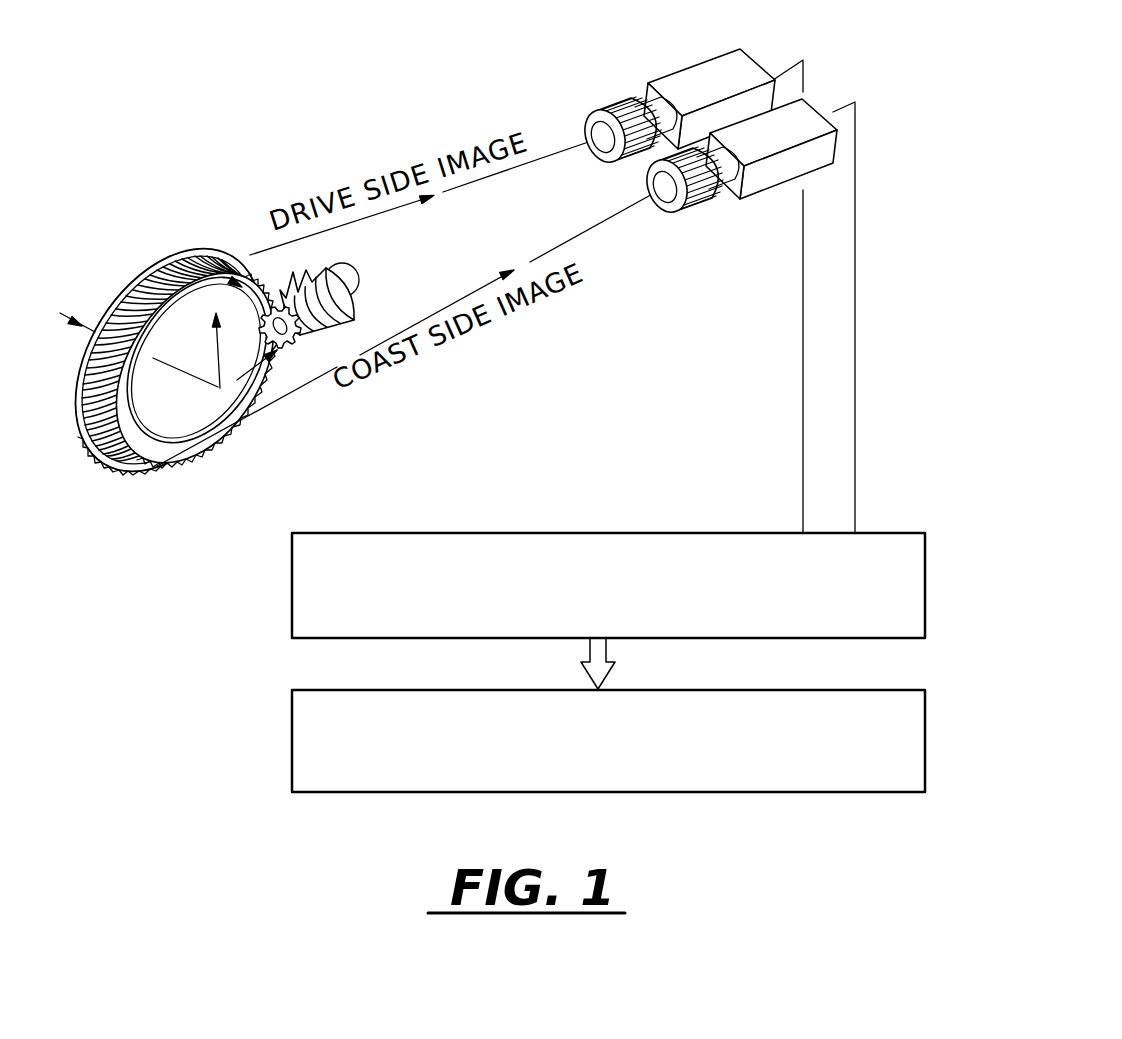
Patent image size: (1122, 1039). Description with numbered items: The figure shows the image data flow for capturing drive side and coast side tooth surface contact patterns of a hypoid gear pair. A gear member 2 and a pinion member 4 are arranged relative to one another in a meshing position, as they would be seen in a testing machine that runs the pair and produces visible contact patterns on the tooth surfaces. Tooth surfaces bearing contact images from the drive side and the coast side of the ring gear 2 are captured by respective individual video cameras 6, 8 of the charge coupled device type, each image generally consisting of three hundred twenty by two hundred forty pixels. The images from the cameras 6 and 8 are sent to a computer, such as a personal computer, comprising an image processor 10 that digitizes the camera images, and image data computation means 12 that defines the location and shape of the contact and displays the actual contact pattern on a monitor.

The gear member 2 is at (187, 253).
The pinion member 4 is at (352, 298).
The video camera 6 is at (687, 76).
The video camera 8 is at (816, 112).
The image processor 10 is at (631, 533).
The image data computation means 12 is at (782, 793).